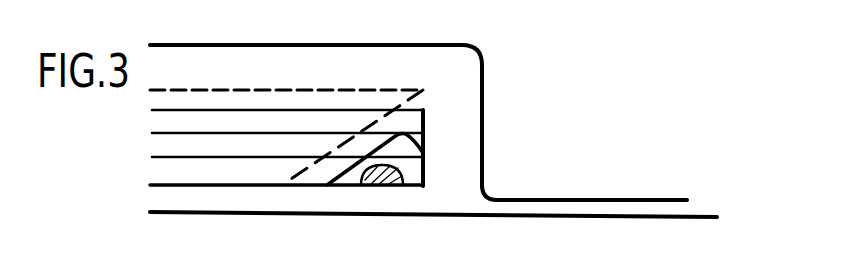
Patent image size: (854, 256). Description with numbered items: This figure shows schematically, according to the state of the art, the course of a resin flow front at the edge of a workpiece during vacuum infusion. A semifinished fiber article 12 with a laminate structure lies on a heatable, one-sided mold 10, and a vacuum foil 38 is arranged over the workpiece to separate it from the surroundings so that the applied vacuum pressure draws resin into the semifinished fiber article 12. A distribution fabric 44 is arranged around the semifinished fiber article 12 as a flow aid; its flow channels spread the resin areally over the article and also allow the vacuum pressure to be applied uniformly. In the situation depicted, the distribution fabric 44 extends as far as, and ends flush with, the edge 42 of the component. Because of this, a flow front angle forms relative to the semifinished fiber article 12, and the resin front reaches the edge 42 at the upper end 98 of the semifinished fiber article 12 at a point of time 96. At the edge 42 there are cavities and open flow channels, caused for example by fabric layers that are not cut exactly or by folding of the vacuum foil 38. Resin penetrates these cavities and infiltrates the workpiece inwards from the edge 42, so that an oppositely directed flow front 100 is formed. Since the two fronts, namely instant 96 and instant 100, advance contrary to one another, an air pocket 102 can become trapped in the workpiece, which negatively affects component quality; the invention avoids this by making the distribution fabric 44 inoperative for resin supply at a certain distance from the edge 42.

The mold 10 is at (353, 217).
The semifinished fiber article 12 is at (211, 175).
The vacuum foil 38 is at (443, 44).
The edge 42 is at (423, 173).
The distribution fabric 44 is at (306, 90).
The point of time 96 is at (307, 167).
The upper end 98 is at (418, 108).
The oppositely directed flow front 100 is at (405, 138).
The air pocket 102 is at (393, 187).